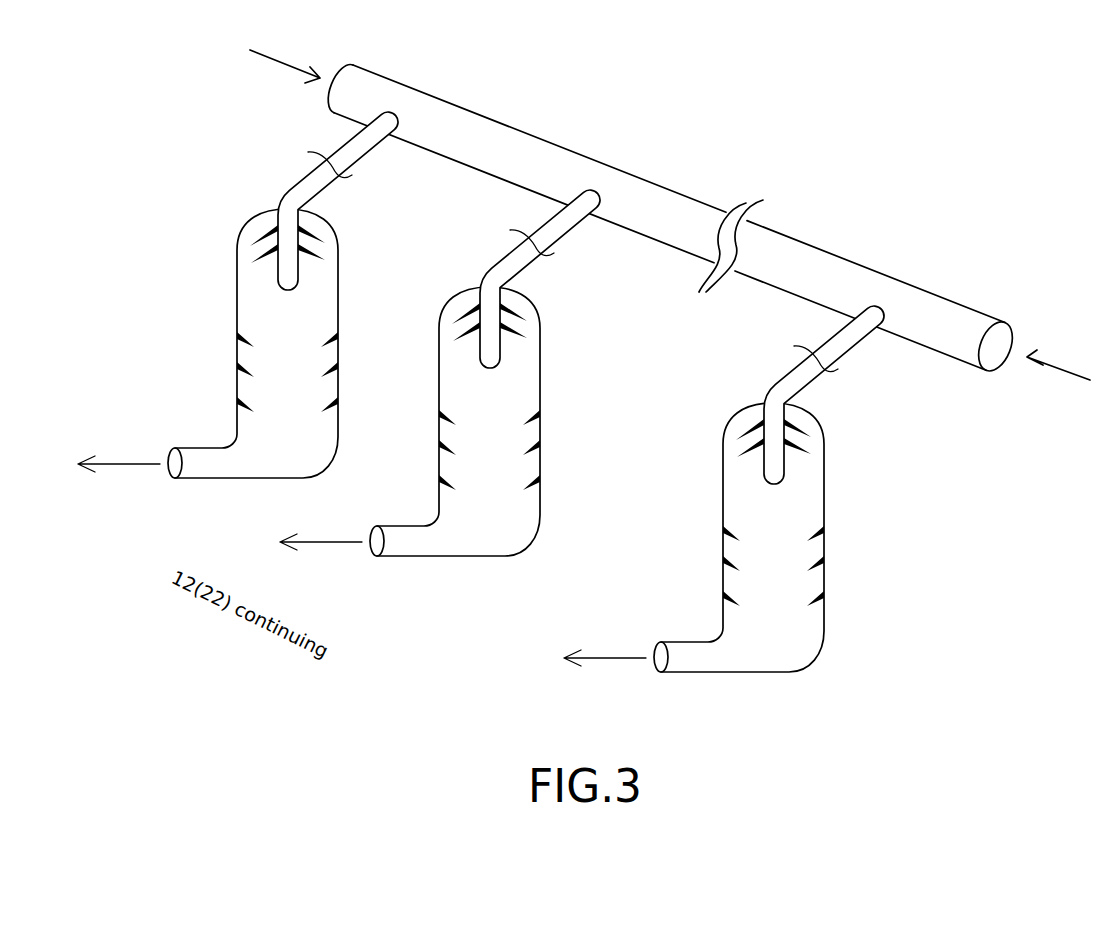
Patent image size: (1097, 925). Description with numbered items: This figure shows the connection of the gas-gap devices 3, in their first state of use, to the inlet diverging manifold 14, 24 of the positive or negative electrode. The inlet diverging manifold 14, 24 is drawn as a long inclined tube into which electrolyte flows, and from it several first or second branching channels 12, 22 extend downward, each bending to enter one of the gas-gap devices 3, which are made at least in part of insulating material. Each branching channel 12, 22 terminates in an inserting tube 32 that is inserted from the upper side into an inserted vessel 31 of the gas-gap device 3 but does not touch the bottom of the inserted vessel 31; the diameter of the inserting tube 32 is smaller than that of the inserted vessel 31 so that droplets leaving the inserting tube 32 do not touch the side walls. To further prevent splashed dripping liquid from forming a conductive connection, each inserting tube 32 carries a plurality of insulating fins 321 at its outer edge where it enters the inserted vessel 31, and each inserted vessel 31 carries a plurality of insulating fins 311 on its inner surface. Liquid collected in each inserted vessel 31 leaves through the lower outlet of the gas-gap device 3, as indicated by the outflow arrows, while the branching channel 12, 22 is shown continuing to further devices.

The inlet diverging manifold 14 is at (670, 215).
The inlet diverging manifold 24 is at (842, 253).
The first branching channel 12 is at (546, 240).
The second branching channel 22 is at (815, 363).
The gas-gap device 3 is at (774, 489).
The inserted vessel 31 is at (792, 537).
The fins 311 is at (822, 607).
The inserting tube 32 is at (824, 395).
The fins 321 is at (803, 451).